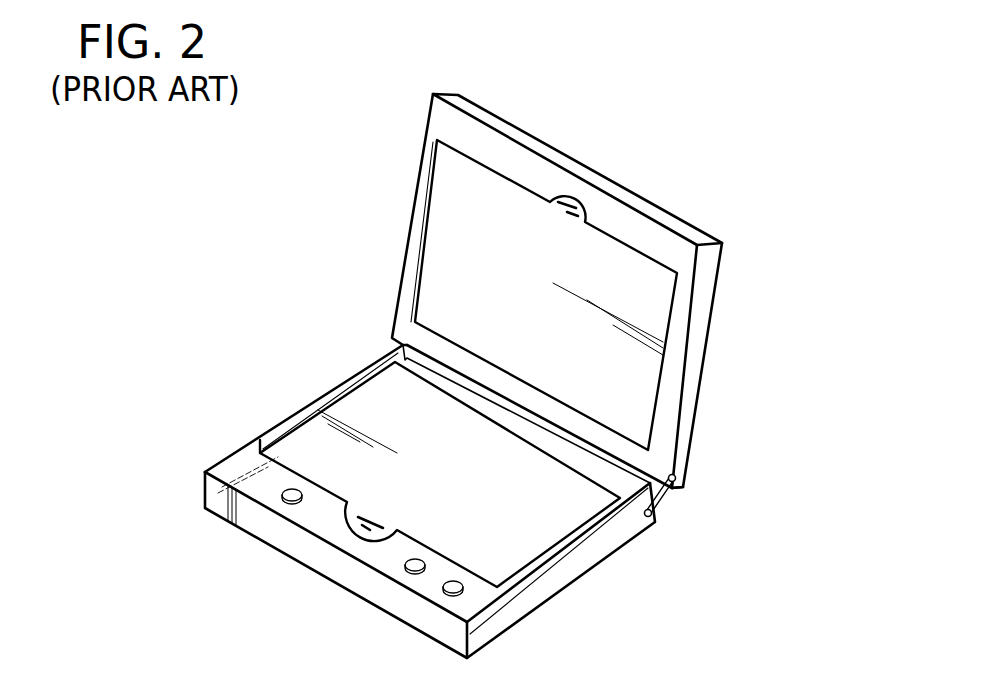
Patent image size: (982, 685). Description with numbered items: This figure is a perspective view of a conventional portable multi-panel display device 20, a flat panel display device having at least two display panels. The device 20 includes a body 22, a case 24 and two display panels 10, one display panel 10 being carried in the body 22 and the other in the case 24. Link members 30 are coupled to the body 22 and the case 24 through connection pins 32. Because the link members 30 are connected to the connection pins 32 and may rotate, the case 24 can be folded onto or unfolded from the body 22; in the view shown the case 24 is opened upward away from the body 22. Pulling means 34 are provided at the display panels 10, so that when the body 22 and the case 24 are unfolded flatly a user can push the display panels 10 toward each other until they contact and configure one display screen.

The display panel 10 is at (433, 262).
The portable multi-panel display device 20 is at (740, 303).
The body 22 is at (572, 570).
The case 24 is at (653, 212).
The link member 30 is at (663, 495).
The connection pin 32 is at (683, 482).
The pulling means 34 is at (552, 200).